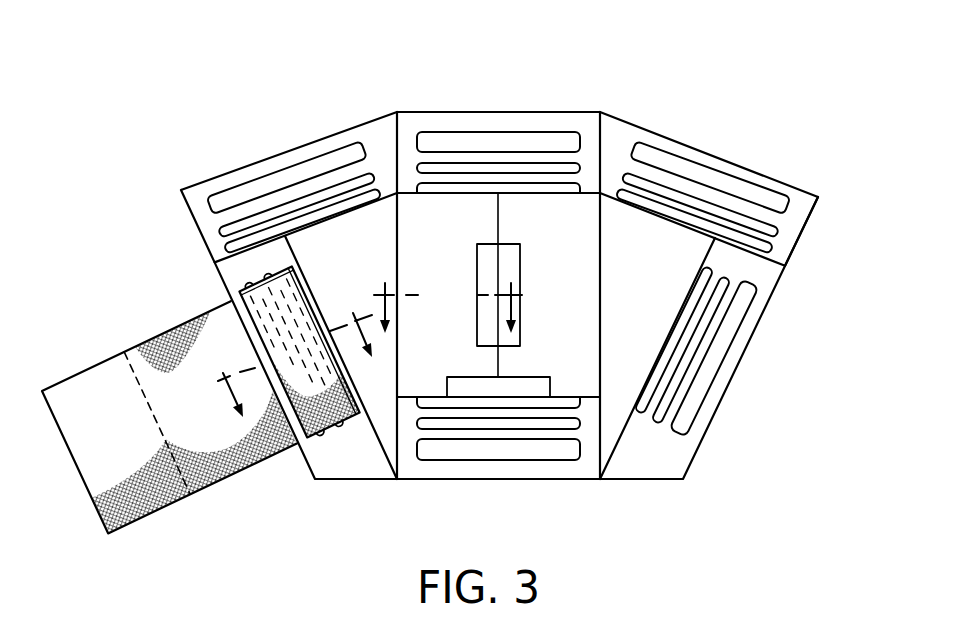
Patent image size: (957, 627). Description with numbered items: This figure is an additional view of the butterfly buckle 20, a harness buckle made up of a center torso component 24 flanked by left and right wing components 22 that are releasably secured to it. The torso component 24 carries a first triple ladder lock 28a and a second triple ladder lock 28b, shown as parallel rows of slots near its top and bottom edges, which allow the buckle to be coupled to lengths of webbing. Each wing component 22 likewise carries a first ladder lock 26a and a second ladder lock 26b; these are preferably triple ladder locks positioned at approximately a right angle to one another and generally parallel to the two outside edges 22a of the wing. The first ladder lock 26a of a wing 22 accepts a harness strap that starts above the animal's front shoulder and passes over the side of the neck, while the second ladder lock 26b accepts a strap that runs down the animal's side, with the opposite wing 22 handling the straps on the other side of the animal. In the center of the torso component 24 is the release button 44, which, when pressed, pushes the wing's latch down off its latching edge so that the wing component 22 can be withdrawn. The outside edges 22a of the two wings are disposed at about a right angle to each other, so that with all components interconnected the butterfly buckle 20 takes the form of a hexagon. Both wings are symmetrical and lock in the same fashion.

The butterfly buckle 20 is at (662, 96).
The wing component 22 is at (361, 458).
The outside edge 22a is at (194, 231).
The center torso component 24 is at (430, 123).
The first ladder lock 26a is at (262, 195).
The second ladder lock 26b is at (703, 387).
The first triple ladder lock 28a is at (537, 140).
The second triple ladder lock 28b is at (472, 452).
The release button 44 is at (481, 253).